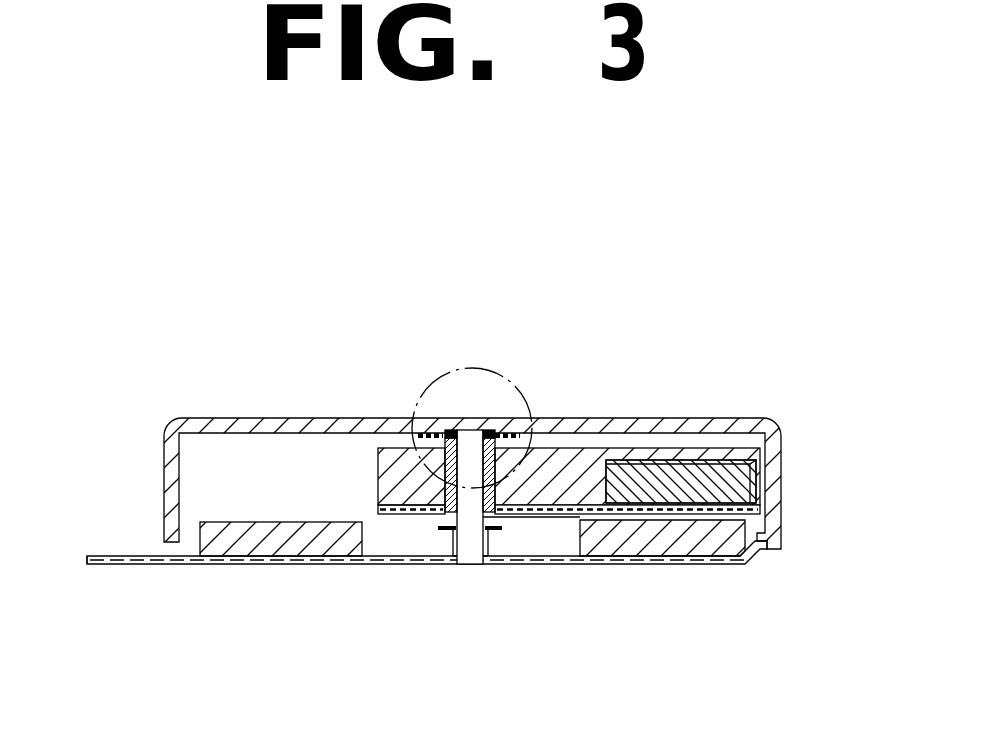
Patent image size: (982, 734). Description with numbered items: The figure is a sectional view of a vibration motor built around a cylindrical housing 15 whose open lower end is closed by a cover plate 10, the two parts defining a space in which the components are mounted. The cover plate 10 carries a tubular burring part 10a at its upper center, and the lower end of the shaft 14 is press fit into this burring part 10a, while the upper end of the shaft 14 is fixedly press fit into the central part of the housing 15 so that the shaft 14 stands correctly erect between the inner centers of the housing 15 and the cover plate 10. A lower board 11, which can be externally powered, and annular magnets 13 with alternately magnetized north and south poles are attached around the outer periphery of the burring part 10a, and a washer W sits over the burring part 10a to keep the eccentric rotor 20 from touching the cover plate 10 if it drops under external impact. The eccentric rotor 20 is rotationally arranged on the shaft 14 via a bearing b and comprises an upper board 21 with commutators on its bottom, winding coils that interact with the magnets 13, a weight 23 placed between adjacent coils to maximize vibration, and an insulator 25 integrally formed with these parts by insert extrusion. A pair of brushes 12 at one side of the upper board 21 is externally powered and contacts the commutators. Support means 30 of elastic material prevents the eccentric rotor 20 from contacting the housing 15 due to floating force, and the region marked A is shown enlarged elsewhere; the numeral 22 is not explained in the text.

The cover plate 10 is at (105, 566).
The tubular burring part 10a is at (463, 557).
The lower board 11 is at (118, 556).
The brushes 12 is at (495, 546).
The annular magnets 13 is at (350, 535).
The shaft 14 is at (474, 432).
The cylindrical housing 15 is at (777, 478).
The eccentric rotor 20 is at (366, 450).
The upper board 21 is at (580, 522).
The thin plate 22 is at (500, 515).
The weight 23 is at (740, 470).
The insulator 25 is at (672, 450).
The support means 30 is at (443, 436).
The washer W is at (447, 531).
The bearing b is at (437, 446).
The enlarged region A is at (527, 403).